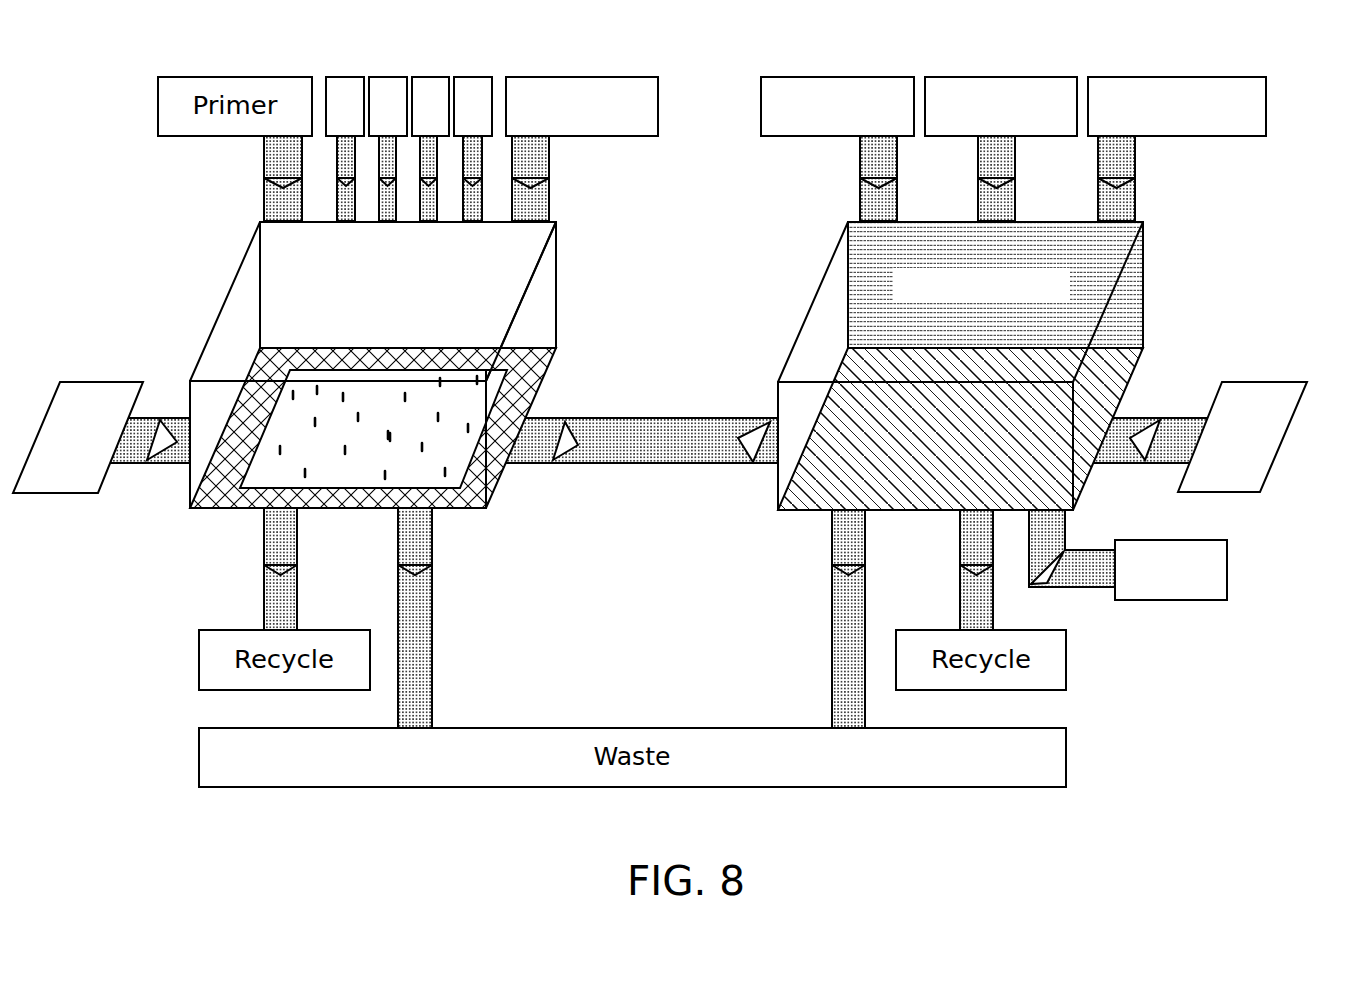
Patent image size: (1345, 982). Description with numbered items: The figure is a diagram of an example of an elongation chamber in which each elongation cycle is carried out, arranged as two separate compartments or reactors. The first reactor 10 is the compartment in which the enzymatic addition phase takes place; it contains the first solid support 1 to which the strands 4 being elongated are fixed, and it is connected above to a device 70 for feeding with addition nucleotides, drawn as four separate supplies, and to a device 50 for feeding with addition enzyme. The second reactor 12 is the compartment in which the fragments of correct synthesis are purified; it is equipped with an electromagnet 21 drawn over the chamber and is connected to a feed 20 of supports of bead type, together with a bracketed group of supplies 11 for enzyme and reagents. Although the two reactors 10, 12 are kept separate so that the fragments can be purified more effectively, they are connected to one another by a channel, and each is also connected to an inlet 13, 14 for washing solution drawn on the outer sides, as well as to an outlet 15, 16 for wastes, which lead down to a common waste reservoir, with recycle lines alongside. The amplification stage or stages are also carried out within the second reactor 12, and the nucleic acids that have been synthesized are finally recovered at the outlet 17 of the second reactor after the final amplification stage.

The first solid support 1 is at (508, 382).
The strands 4 is at (447, 474).
The first reactor 10 is at (388, 396).
The reagent supplies 11 is at (1275, 65).
The second reactor 12 is at (1006, 366).
The inlet for washing solution 13 is at (92, 395).
The inlet for washing solution 14 is at (1263, 390).
The outlet for wastes 15 is at (433, 663).
The outlet for wastes 16 is at (830, 663).
The outlet of the second reactor 17 is at (1183, 588).
The feed of supports of bead type 20 is at (852, 87).
The electromagnet 21 is at (1147, 277).
The device for feeding with addition enzyme 50 is at (575, 88).
The device for feeding with addition nucleotides 70 is at (320, 65).